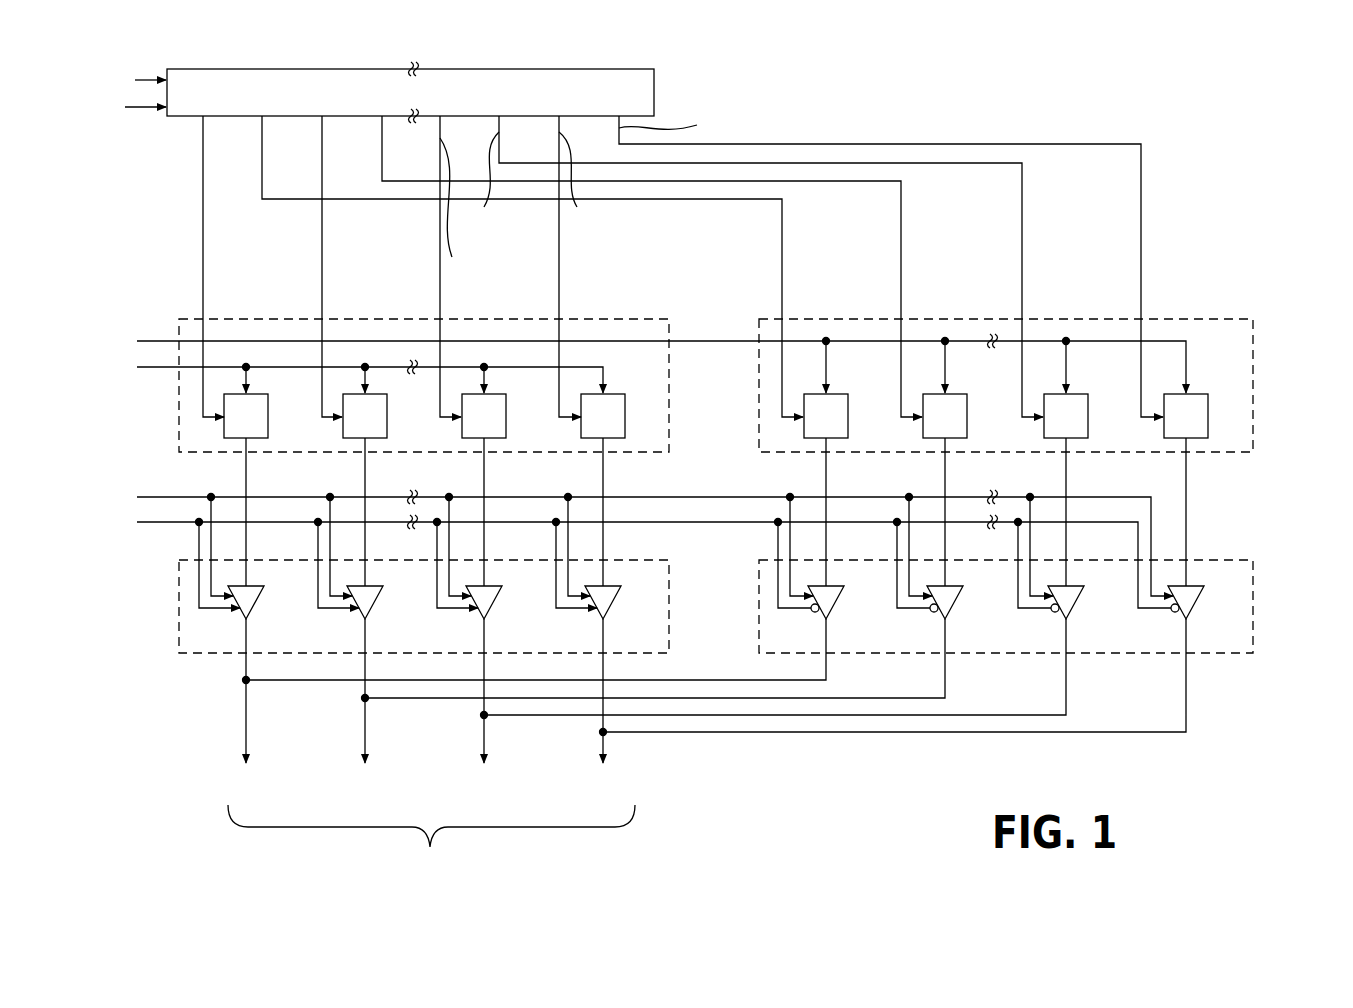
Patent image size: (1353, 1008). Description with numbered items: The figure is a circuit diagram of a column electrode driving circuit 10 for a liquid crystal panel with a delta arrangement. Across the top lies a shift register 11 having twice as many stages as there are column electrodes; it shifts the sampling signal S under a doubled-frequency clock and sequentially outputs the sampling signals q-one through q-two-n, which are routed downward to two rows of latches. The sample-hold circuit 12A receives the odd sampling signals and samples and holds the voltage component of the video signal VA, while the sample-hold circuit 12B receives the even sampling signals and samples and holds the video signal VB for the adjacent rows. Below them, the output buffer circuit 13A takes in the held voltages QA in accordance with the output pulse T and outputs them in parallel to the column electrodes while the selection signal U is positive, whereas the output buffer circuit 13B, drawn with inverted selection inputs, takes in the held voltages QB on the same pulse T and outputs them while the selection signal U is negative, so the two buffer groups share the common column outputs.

The column electrode driving circuit 10 is at (997, 124).
The shift register 11 is at (654, 92).
The sample-hold circuit 12A is at (179, 433).
The sample-hold circuit 12B is at (1253, 340).
The output buffer circuit 13A is at (179, 578).
The output buffer circuit 13B is at (1254, 582).